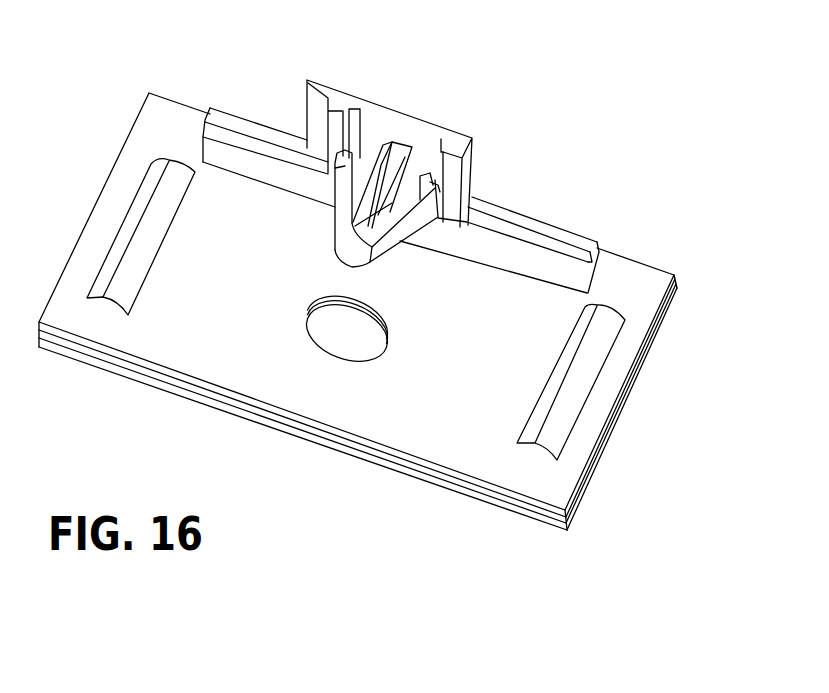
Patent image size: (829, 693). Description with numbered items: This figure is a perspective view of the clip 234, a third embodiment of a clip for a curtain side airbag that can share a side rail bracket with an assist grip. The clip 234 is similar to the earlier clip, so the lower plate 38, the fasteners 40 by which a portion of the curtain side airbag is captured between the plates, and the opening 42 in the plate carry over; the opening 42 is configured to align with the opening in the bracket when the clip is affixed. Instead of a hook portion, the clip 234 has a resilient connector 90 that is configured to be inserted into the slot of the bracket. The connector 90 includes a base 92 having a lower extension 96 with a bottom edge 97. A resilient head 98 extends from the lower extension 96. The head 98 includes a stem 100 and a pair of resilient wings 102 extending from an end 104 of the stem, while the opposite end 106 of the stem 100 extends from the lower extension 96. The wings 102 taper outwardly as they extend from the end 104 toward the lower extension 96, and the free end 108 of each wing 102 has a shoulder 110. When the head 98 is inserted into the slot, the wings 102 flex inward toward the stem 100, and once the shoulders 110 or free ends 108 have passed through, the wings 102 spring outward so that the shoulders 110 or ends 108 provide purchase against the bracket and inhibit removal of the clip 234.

The lower plate 38 is at (640, 280).
The fasteners 40 is at (142, 233).
The opening 42 is at (343, 342).
The resilient connector 90 is at (490, 117).
The base 92 is at (552, 230).
The lower extension 96 is at (467, 170).
The bottom edge 97 is at (458, 142).
The resilient head 98 is at (388, 271).
The stem 100 is at (340, 139).
The resilient wings 102 is at (337, 172).
The end 104 is at (335, 218).
The opposite end 106 is at (397, 150).
The free end 108 is at (353, 108).
The shoulder 110 is at (358, 155).
The clip 234 is at (666, 113).